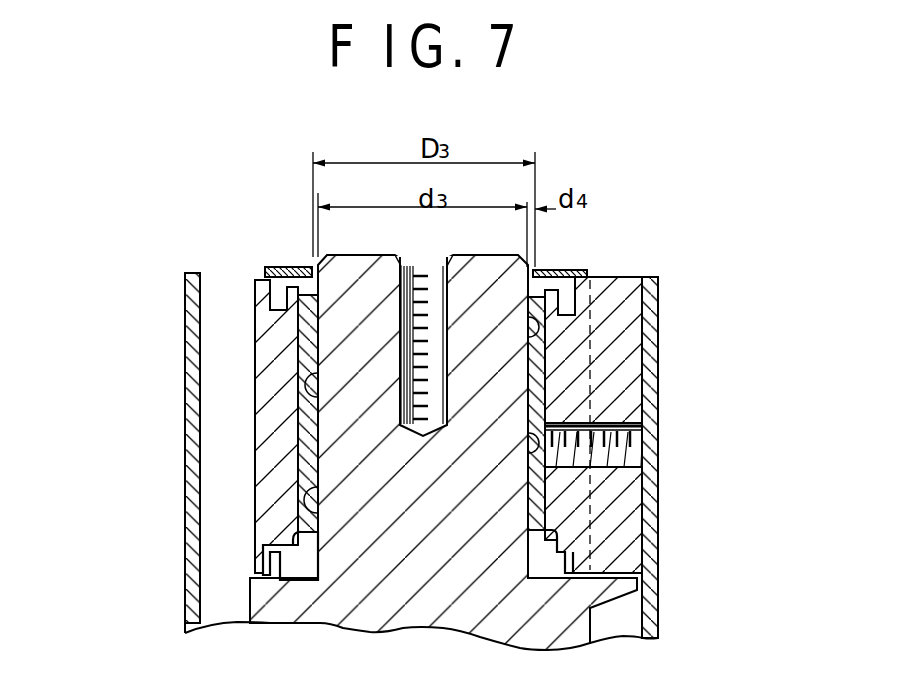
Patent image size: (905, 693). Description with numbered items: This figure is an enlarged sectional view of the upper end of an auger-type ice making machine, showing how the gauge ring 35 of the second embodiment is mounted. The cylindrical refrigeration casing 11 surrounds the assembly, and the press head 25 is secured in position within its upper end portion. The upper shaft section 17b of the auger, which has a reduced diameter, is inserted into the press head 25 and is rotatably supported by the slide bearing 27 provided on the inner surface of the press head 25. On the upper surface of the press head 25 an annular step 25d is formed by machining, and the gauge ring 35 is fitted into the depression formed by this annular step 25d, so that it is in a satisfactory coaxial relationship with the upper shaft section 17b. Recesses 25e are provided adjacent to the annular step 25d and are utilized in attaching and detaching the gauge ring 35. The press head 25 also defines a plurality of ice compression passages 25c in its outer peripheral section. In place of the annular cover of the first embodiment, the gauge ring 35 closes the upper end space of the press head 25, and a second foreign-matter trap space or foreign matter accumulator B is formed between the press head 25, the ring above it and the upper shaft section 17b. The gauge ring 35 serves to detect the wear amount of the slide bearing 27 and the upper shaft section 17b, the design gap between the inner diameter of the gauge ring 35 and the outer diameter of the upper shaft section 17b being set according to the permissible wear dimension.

The refrigeration casing 11 is at (650, 328).
The upper shaft section 17b is at (490, 492).
The press head 25 is at (270, 377).
The ice compression passages 25c is at (223, 302).
The annular step 25d is at (593, 287).
The recesses 25e is at (258, 278).
The slide bearing 27 is at (307, 455).
The gauge ring 35 is at (290, 267).
The foreign matter accumulator B is at (568, 283).